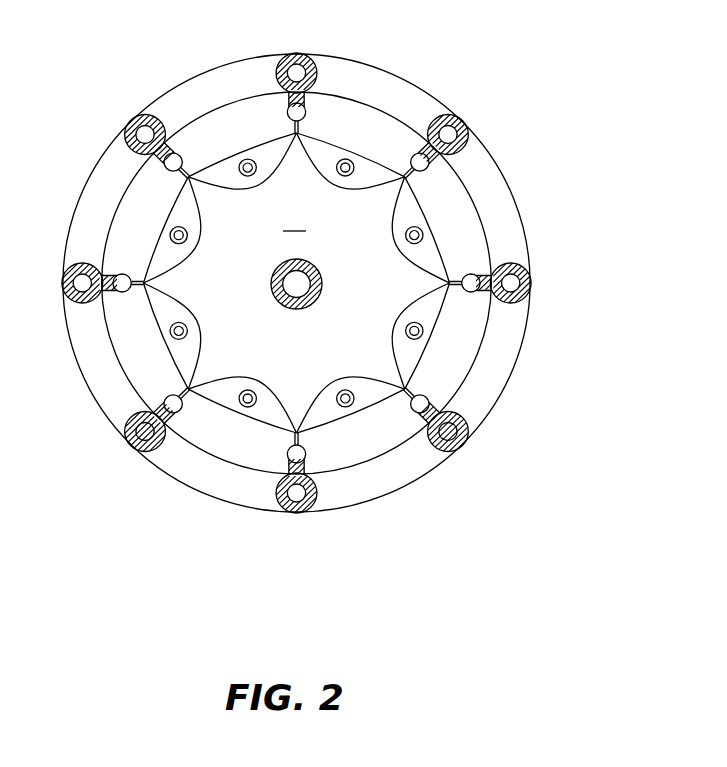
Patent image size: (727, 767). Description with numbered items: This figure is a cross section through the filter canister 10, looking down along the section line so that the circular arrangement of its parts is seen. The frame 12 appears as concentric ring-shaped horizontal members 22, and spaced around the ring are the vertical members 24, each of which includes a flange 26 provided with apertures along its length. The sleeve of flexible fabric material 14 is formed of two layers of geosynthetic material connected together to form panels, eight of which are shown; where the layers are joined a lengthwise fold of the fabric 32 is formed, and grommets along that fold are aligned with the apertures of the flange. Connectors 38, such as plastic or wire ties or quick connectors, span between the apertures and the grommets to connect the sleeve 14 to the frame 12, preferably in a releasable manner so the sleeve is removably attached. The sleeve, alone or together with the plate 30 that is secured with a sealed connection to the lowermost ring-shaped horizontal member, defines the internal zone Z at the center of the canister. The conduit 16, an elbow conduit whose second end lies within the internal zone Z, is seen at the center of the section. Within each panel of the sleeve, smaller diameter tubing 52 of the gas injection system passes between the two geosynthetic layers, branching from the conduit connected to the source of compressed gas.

The filter canister 10 is at (530, 40).
The frame 12 is at (541, 394).
The sleeve of flexible fabric material 14 is at (352, 150).
The conduit 16 is at (322, 282).
The ring-shaped horizontal members 22 is at (523, 213).
The vertical members 24 is at (512, 265).
The flange 26 is at (153, 417).
The plate 30 is at (350, 452).
The lengthwise fold of the fabric 32 is at (288, 443).
The connectors 38 is at (175, 157).
The tubing 52 is at (176, 237).